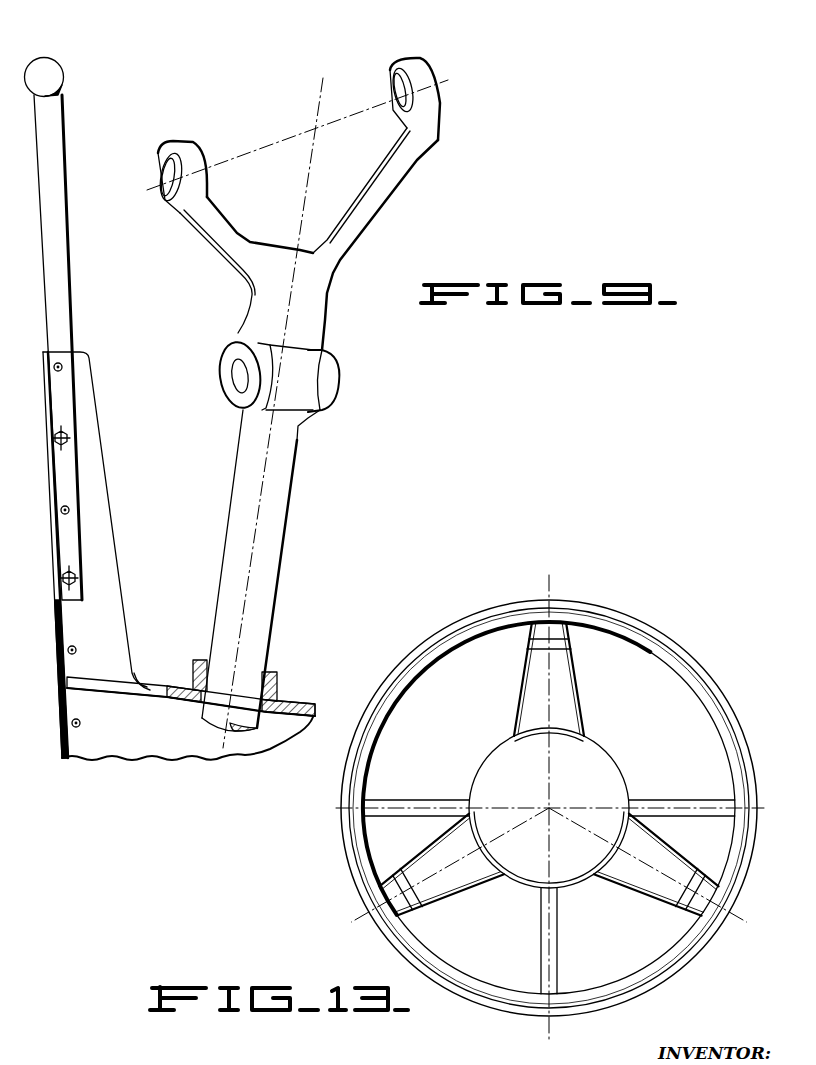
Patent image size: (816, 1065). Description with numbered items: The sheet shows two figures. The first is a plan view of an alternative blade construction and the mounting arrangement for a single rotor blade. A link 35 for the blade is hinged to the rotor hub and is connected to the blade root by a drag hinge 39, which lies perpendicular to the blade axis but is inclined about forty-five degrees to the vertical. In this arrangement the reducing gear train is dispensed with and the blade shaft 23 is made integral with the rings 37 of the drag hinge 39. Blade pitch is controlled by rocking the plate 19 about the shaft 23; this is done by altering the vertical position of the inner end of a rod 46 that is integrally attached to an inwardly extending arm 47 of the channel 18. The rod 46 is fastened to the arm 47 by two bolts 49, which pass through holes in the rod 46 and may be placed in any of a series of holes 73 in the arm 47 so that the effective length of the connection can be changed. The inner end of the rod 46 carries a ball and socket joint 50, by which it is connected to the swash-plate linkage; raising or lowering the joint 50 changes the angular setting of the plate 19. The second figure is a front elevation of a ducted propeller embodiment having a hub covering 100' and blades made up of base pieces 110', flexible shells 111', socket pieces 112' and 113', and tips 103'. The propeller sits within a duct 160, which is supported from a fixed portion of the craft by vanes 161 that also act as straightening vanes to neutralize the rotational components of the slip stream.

In FIG. 9, the channel 18 is at (58, 703).
In FIG. 9, the plate 19 is at (118, 684).
In FIG. 9, the shaft 23 is at (278, 584).
In FIG. 9, the link 35 is at (228, 252).
In FIG. 9, the rings 37 is at (257, 400).
In FIG. 9, the drag hinge 39 is at (237, 382).
In FIG. 9, the rod 46 is at (55, 197).
In FIG. 9, the arm 47 is at (95, 418).
In FIG. 9, the bolts 49 is at (68, 440).
In FIG. 9, the ball and socket joint 50 is at (58, 75).
In FIG. 9, the holes 73 is at (62, 368).
In FIG. 13, the hub covering 100' is at (574, 808).
In FIG. 13, the tips 103' is at (568, 782).
In FIG. 13, the base pieces 110' is at (549, 808).
In FIG. 13, the flexible shells 111' is at (548, 773).
In FIG. 13, the socket piece 112' is at (577, 821).
In FIG. 13, the socket piece 113' is at (543, 791).
In FIG. 13, the duct 160 is at (708, 945).
In FIG. 13, the vanes 161 is at (685, 806).